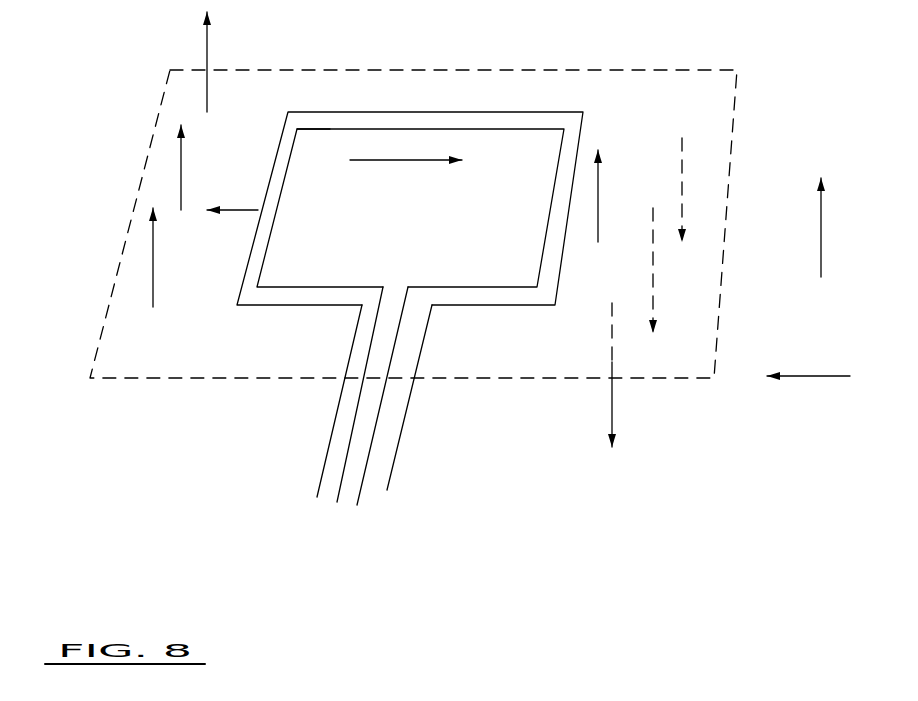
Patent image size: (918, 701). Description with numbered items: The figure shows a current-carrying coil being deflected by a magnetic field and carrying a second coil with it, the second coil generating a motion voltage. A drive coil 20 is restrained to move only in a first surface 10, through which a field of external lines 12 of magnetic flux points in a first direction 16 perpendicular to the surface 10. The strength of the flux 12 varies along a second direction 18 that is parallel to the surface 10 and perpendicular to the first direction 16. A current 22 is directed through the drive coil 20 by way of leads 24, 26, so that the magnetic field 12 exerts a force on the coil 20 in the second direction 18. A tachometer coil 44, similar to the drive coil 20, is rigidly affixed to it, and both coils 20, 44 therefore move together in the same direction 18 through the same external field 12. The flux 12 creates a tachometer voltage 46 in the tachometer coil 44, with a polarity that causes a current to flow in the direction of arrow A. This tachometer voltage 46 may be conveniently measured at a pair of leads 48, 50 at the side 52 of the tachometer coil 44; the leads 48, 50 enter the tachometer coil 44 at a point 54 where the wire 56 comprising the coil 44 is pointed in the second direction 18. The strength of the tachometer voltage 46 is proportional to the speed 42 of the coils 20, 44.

The first surface 10 is at (107, 300).
The external lines of magnetic flux 12 is at (172, 166).
The first direction 16 is at (822, 238).
The second direction 18 is at (823, 378).
The drive coil 20 is at (495, 112).
The current 22 is at (588, 218).
The lead 24 is at (337, 405).
The lead 26 is at (405, 423).
The speed 42 is at (247, 210).
The tachometer coil 44 is at (345, 128).
The tachometer voltage 46 is at (406, 152).
The lead 48 is at (337, 500).
The lead 50 is at (363, 475).
The side of the tachometer coil 52 is at (480, 272).
The point 54 is at (395, 307).
The wire 56 is at (432, 295).